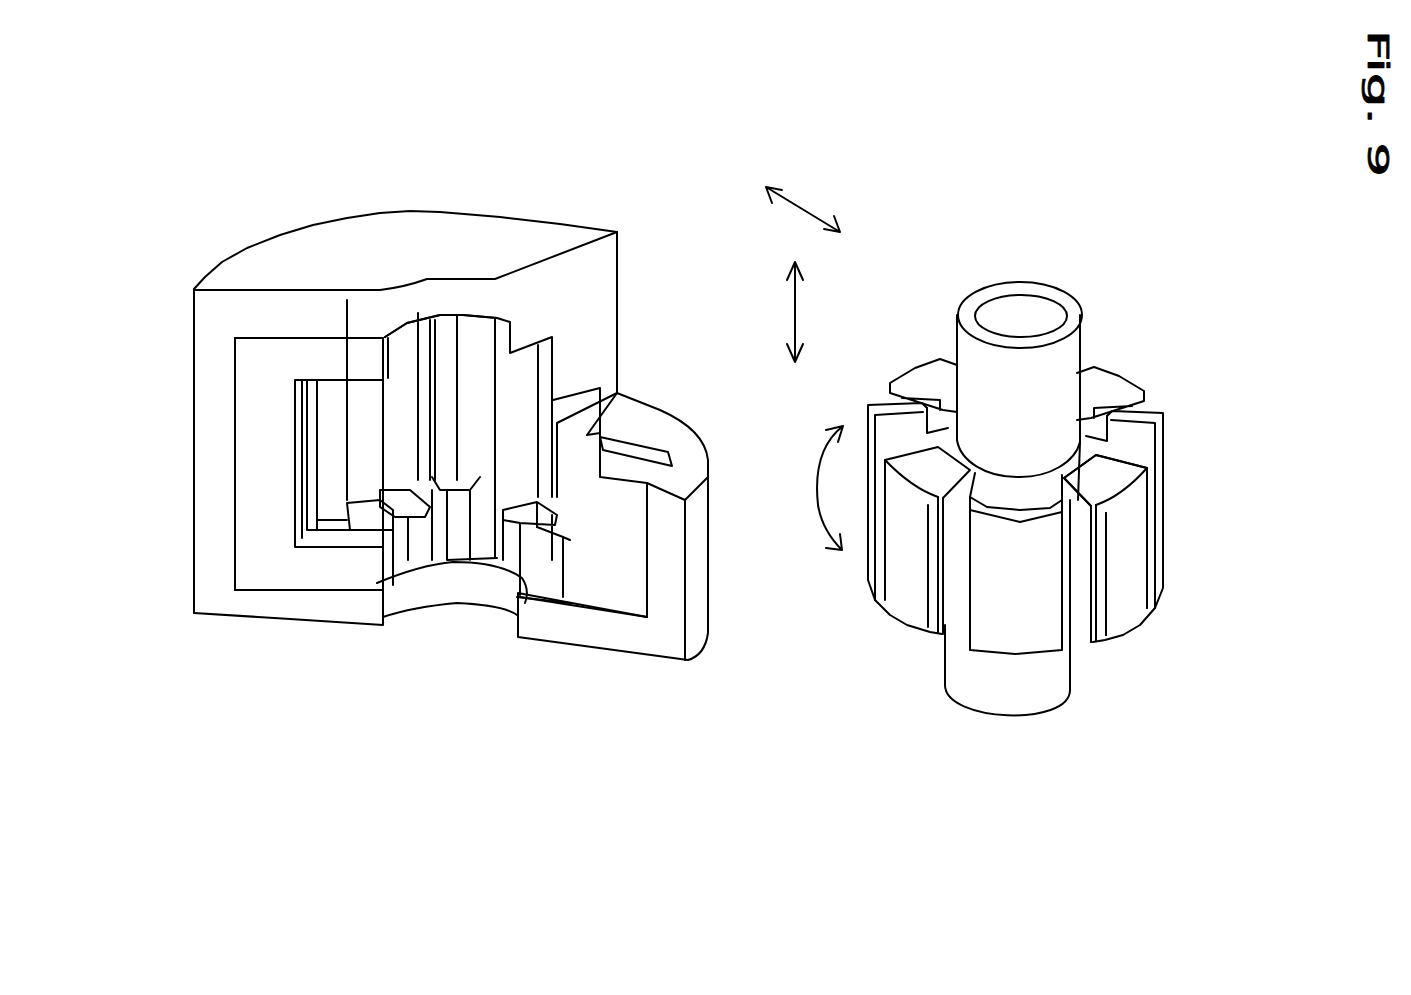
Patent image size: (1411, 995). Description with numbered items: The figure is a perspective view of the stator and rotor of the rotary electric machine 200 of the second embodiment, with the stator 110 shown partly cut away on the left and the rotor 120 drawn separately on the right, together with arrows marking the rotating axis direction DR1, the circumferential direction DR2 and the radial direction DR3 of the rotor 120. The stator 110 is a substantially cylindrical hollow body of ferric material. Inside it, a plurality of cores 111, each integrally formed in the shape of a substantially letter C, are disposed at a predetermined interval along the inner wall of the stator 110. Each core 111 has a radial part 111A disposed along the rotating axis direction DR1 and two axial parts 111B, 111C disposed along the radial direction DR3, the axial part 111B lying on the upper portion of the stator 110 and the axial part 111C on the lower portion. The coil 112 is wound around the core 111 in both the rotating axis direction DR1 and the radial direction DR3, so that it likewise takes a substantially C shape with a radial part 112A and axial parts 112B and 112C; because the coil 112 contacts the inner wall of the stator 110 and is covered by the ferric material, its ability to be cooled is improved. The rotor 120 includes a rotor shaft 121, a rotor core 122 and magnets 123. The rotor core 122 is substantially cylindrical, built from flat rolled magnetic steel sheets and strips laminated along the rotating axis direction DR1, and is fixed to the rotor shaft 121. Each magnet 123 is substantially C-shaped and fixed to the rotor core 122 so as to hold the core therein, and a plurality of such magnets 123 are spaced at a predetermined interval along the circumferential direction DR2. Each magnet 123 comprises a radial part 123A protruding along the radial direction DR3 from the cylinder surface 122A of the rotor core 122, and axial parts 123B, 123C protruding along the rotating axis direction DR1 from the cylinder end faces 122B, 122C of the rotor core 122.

The rotary electric machine 200 is at (674, 127).
The stator 110 is at (467, 225).
The core 111 is at (583, 425).
The radial part 111A is at (390, 423).
The axial part 111B is at (420, 337).
The axial part 111C is at (395, 522).
The coil 112 is at (255, 540).
The radial part 112A is at (262, 460).
The axial part 112B is at (323, 363).
The axial part 112C is at (318, 570).
The rotor 120 is at (1037, 496).
The rotor shaft 121 is at (1067, 355).
The rotor core 122 is at (940, 600).
The cylinder surface 122A is at (1060, 593).
The cylinder end face 122B is at (907, 450).
The cylinder end face 122C is at (958, 585).
The magnet 123 is at (898, 597).
The radial part 123A is at (1122, 550).
The axial part 123B is at (1108, 477).
The axial part 123C is at (1123, 640).
The rotating axis direction DR1 is at (805, 305).
The circumferential direction DR2 is at (822, 467).
The radial direction DR3 is at (812, 205).